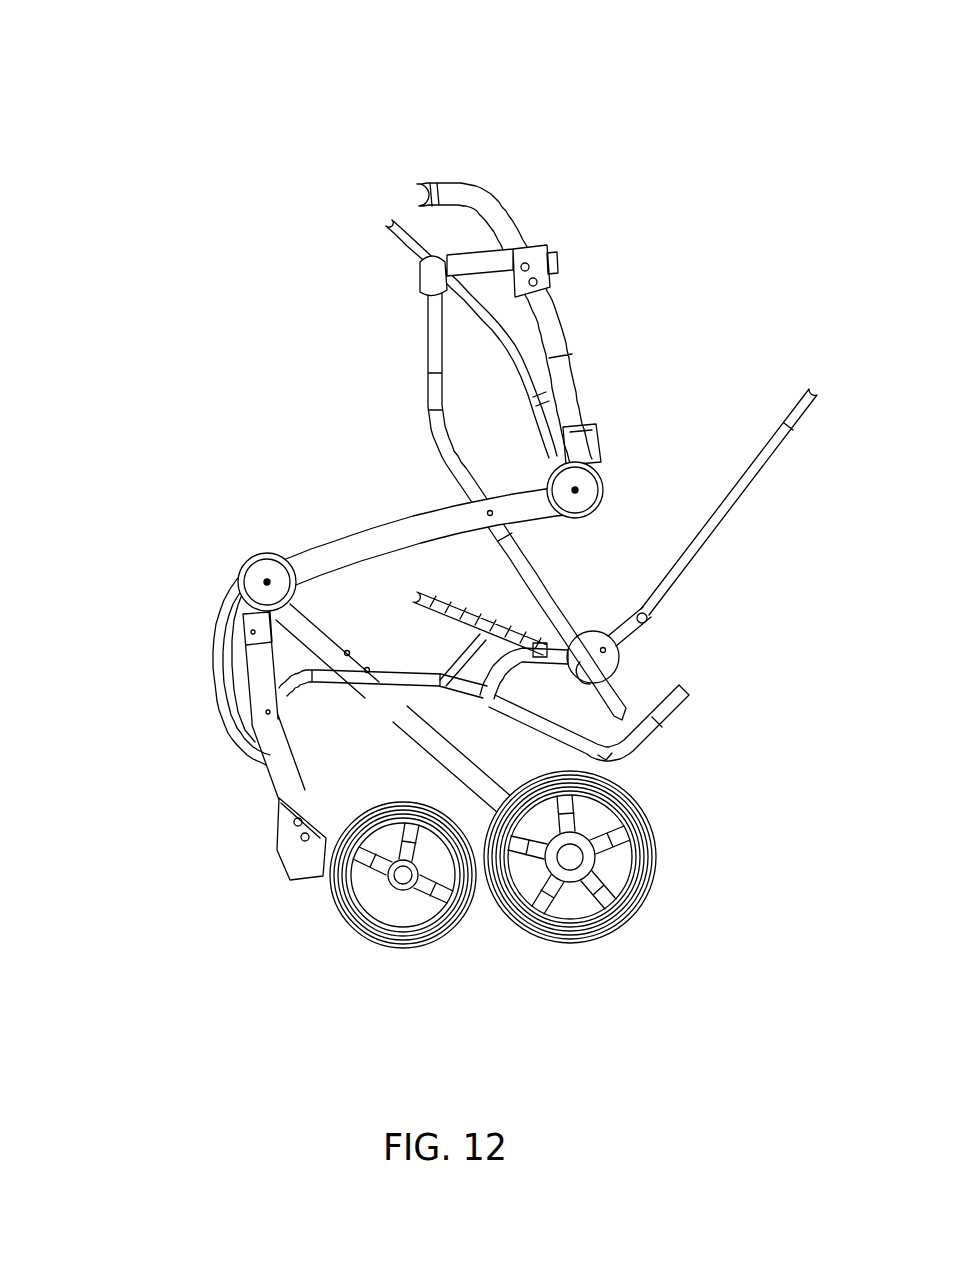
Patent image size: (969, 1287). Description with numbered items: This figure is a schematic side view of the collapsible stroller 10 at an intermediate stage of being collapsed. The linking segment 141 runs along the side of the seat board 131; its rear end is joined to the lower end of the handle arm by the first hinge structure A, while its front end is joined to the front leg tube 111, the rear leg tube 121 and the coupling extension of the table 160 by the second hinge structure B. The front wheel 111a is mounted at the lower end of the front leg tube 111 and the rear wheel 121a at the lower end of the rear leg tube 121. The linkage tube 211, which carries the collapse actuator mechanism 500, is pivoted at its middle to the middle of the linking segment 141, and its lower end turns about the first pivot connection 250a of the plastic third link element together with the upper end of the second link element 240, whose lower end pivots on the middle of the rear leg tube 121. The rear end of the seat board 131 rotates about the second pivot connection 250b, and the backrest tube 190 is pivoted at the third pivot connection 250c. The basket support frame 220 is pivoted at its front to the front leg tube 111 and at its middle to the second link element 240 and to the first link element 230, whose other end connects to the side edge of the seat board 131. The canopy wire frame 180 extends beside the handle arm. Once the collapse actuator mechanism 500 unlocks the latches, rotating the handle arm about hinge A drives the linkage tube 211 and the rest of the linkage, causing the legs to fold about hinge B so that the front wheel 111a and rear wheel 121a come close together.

The collapsible stroller 10 is at (73, 109).
The canopy wire frame 180 is at (388, 224).
The collapse actuator mechanism 500 is at (412, 270).
The linkage tube 211 is at (433, 343).
The linking segment 141 is at (452, 516).
The seat board 131 is at (457, 670).
The first link element 230 is at (410, 705).
The backrest tube 190 is at (713, 526).
The first pivot connection 250a is at (595, 672).
The second pivot connection 250b is at (653, 610).
The third pivot connection 250c is at (629, 647).
The basket support frame 220 is at (692, 703).
The second link element 240 is at (607, 752).
The table 160 is at (240, 658).
The front leg tube 111 is at (283, 761).
The rear leg tube 121 is at (400, 727).
The front wheel 111a is at (333, 913).
The rear wheel 121a is at (640, 900).
The first hinge structure A is at (607, 480).
The second hinge structure B is at (253, 556).